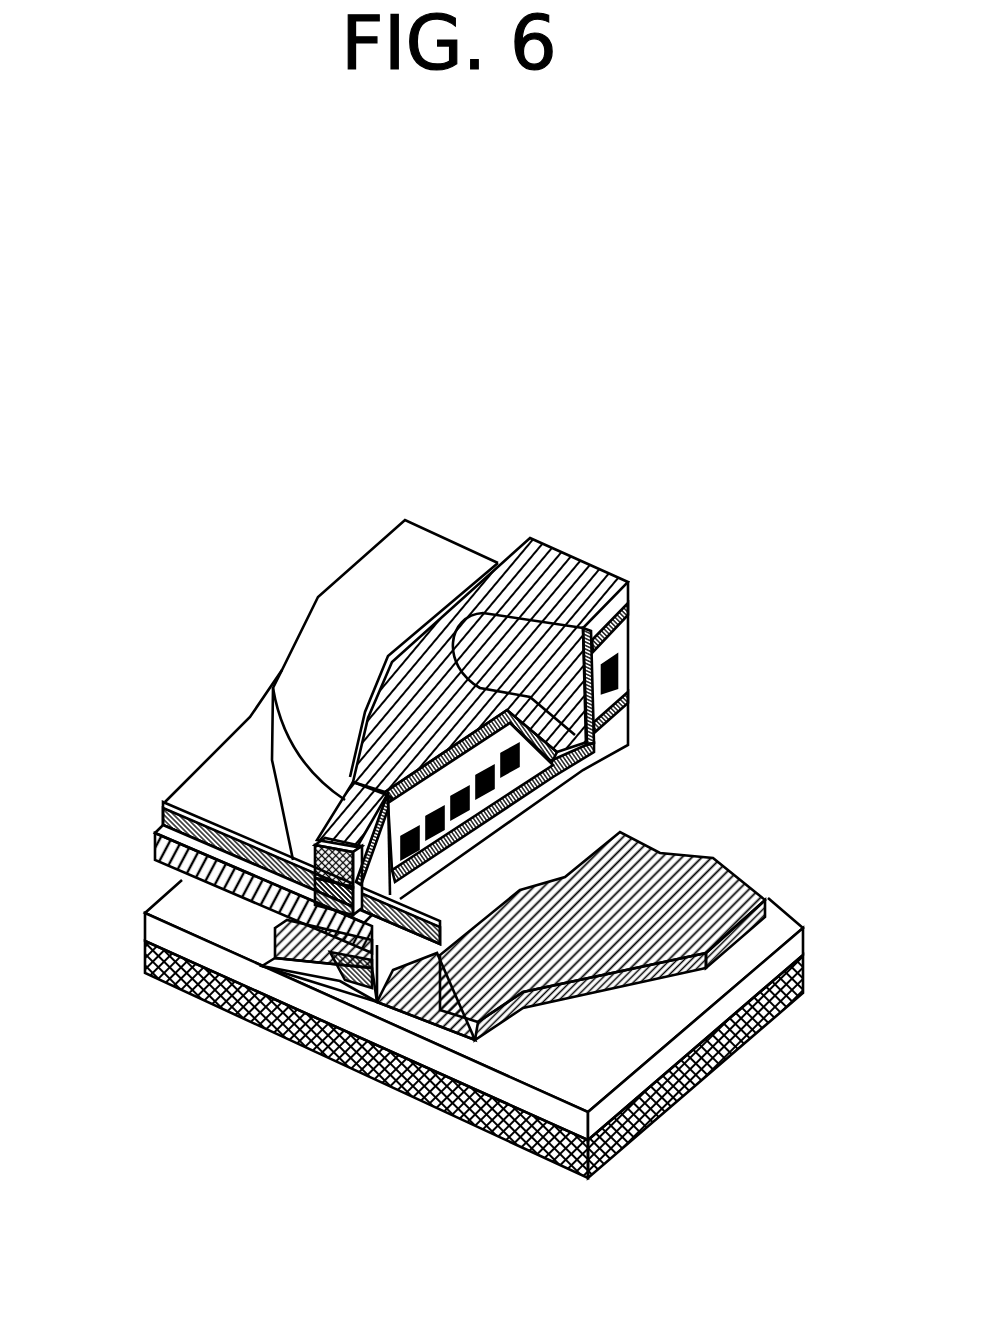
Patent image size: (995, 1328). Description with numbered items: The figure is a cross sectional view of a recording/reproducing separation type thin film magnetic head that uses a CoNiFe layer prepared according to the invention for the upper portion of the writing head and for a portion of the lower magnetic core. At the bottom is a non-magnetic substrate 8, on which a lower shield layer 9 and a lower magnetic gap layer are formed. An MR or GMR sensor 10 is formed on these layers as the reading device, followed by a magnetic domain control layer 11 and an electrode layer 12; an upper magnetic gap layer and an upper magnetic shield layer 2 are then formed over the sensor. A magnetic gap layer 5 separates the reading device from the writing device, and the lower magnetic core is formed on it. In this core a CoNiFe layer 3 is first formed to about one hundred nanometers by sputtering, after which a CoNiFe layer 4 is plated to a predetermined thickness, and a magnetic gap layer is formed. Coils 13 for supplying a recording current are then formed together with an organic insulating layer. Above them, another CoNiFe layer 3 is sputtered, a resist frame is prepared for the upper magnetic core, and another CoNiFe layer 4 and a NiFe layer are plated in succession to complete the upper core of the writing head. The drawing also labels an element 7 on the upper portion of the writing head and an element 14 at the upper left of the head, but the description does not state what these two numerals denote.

The upper magnetic shield layer 2 is at (155, 847).
The CoNiFe layer 3 is at (623, 638).
The CoNiFe layer 4 is at (632, 607).
The magnetic gap layer 5 is at (163, 805).
The upper yoke 7 is at (600, 578).
The non-magnetic substrate 8 is at (633, 1134).
The lower shield layer 9 is at (700, 1026).
The MR or GMR sensor 10 is at (375, 1003).
The magnetic domain control layer 11 is at (413, 1020).
The electrode layer 12 is at (722, 878).
The coils 13 is at (620, 680).
The coil/yoke 14 is at (345, 598).